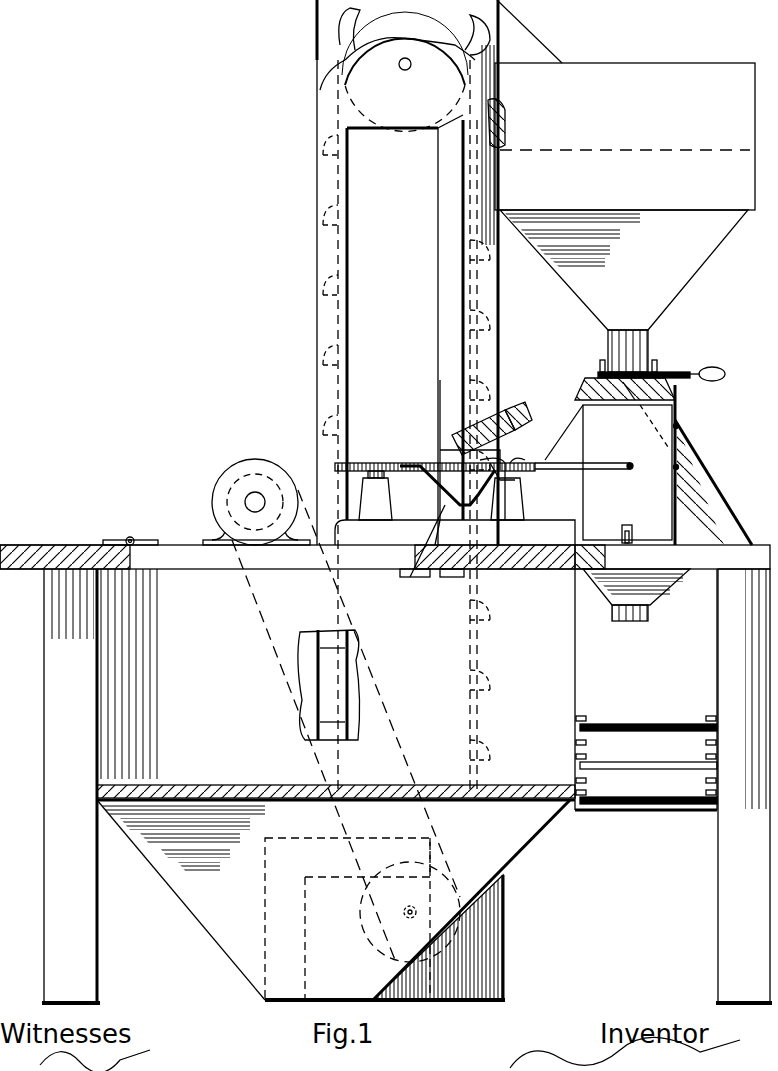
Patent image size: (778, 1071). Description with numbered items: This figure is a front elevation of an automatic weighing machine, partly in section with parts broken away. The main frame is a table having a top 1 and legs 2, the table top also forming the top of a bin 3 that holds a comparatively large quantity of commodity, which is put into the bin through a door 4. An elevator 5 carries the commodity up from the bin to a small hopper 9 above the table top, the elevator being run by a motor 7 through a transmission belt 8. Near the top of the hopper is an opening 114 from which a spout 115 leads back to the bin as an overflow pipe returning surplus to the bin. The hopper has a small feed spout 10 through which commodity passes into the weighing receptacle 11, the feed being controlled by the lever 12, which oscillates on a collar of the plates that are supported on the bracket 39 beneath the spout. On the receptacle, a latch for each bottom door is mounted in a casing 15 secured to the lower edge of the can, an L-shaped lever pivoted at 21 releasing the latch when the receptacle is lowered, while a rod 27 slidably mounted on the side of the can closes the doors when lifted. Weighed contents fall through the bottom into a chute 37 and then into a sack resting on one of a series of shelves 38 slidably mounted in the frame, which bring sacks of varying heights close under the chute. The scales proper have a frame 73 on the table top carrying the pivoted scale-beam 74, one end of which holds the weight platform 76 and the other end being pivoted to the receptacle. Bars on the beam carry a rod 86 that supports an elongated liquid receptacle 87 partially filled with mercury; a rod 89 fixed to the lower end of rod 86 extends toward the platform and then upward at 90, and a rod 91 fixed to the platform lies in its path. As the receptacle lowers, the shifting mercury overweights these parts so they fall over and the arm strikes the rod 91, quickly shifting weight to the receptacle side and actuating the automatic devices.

The table top 1 is at (385, 545).
The legs 2 is at (718, 938).
The bin 3 is at (220, 918).
The door 4 is at (165, 572).
The elevator 5 is at (318, 345).
The motor 7 is at (222, 473).
The transmission belt 8 is at (275, 648).
The small hopper 9 is at (715, 248).
The feed spout 10 is at (650, 338).
The weighing receptacle 11 is at (685, 430).
The lever 12 is at (725, 371).
The casing 15 is at (634, 533).
The pivot 21 is at (700, 456).
The rod 27 is at (688, 477).
The chute 37 is at (660, 590).
The shelves 38 is at (655, 800).
The bracket 39 is at (598, 398).
The frame 73 is at (430, 525).
The scale-beam 74 is at (540, 462).
The weight platform 76 is at (390, 462).
The rod 86 is at (452, 437).
The liquid receptacle 87 is at (535, 412).
The rod 89 is at (485, 498).
The upward arm 90 is at (418, 578).
The rod 91 is at (428, 486).
The opening 114 is at (500, 108).
The spout 115 is at (446, 178).